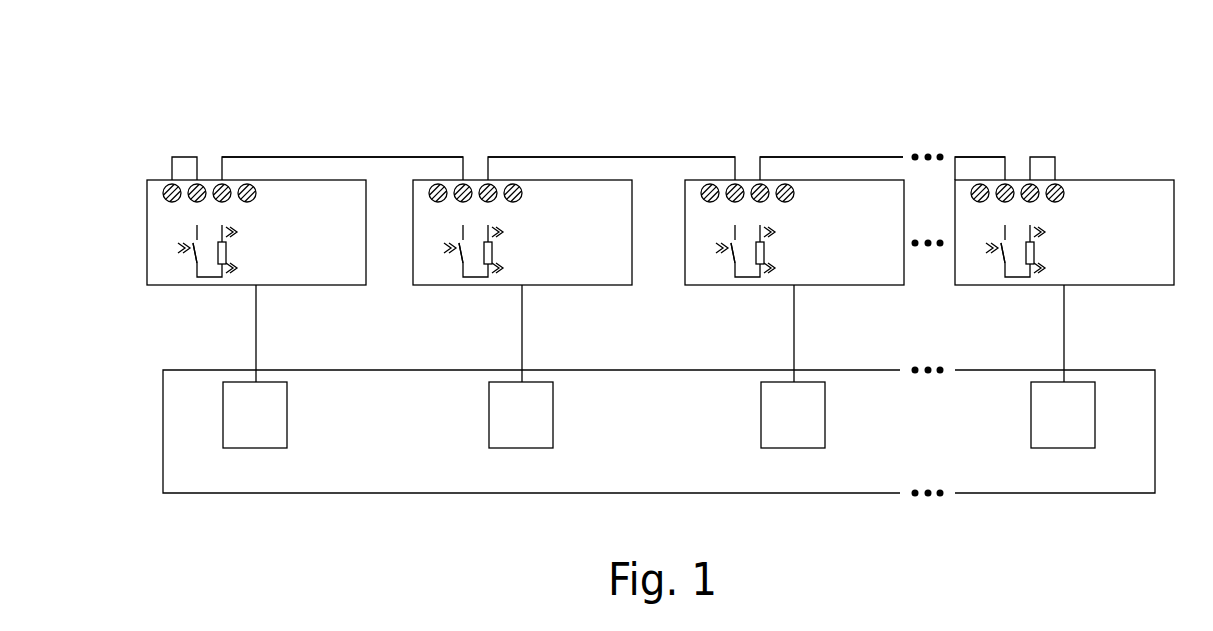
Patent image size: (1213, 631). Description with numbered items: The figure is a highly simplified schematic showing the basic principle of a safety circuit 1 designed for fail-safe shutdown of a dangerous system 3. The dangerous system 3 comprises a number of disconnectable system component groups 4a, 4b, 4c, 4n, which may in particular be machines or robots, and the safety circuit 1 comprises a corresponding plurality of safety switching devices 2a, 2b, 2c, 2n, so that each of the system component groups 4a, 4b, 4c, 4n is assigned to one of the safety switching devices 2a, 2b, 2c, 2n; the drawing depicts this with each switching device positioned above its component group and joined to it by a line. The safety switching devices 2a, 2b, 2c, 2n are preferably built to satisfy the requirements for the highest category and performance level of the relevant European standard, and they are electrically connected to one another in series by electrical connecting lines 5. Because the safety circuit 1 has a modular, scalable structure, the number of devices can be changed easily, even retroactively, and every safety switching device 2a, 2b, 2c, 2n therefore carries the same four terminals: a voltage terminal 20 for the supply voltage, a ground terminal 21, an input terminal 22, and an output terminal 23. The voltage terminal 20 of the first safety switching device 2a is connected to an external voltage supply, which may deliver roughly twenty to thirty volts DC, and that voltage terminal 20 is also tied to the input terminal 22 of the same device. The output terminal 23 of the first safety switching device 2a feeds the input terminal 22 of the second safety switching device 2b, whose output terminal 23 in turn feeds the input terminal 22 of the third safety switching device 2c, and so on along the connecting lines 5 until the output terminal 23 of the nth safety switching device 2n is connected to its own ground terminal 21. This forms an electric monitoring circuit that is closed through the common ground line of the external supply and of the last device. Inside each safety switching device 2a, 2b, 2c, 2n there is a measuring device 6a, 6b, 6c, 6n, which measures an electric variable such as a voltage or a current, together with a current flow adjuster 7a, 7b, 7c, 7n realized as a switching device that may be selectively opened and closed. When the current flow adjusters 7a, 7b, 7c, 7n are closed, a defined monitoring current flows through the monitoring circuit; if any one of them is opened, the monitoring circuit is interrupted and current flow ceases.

The safety circuit 1 is at (250, 88).
The first safety switching device 2a is at (315, 285).
The second safety switching device 2b is at (581, 285).
The third safety switching device 2c is at (853, 285).
The nth safety switching device 2n is at (1123, 285).
The dangerous system 3 is at (408, 494).
The system component group 4a is at (287, 413).
The system component group 4b is at (555, 413).
The system component group 4c is at (827, 415).
The system component group 4n is at (1034, 400).
The electrical connecting lines 5 is at (297, 157).
The measuring device 6a is at (250, 252).
The measuring device 6b is at (516, 252).
The measuring device 6c is at (788, 252).
The measuring device 6n is at (1058, 252).
The current flow adjuster 7a is at (185, 270).
The current flow adjuster 7b is at (451, 270).
The current flow adjuster 7c is at (723, 270).
The current flow adjuster 7n is at (993, 270).
The voltage terminal 20 is at (163, 193).
The ground terminal 21 is at (256, 195).
The input terminal 22 is at (195, 184).
The output terminal 23 is at (214, 184).